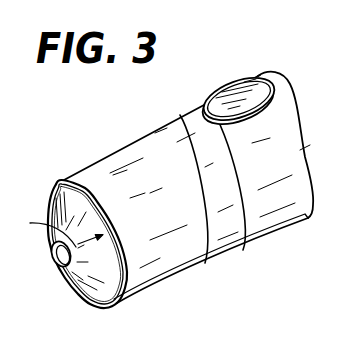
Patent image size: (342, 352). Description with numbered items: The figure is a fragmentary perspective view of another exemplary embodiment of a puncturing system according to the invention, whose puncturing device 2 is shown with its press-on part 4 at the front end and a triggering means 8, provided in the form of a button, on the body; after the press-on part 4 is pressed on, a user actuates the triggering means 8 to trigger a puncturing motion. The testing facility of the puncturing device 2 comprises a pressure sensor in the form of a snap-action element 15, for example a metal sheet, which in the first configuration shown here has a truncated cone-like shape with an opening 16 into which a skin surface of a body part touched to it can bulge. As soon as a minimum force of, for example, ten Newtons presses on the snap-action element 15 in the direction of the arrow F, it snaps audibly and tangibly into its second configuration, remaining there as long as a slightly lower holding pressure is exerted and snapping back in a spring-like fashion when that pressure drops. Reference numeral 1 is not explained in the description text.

The container 1 is at (203, 206).
The puncturing device 2 is at (174, 248).
The press-on part 4 is at (105, 281).
The triggering means 8 is at (234, 88).
The snap-action element 15 is at (62, 188).
The opening 16 is at (58, 264).
The arrow F is at (59, 227).